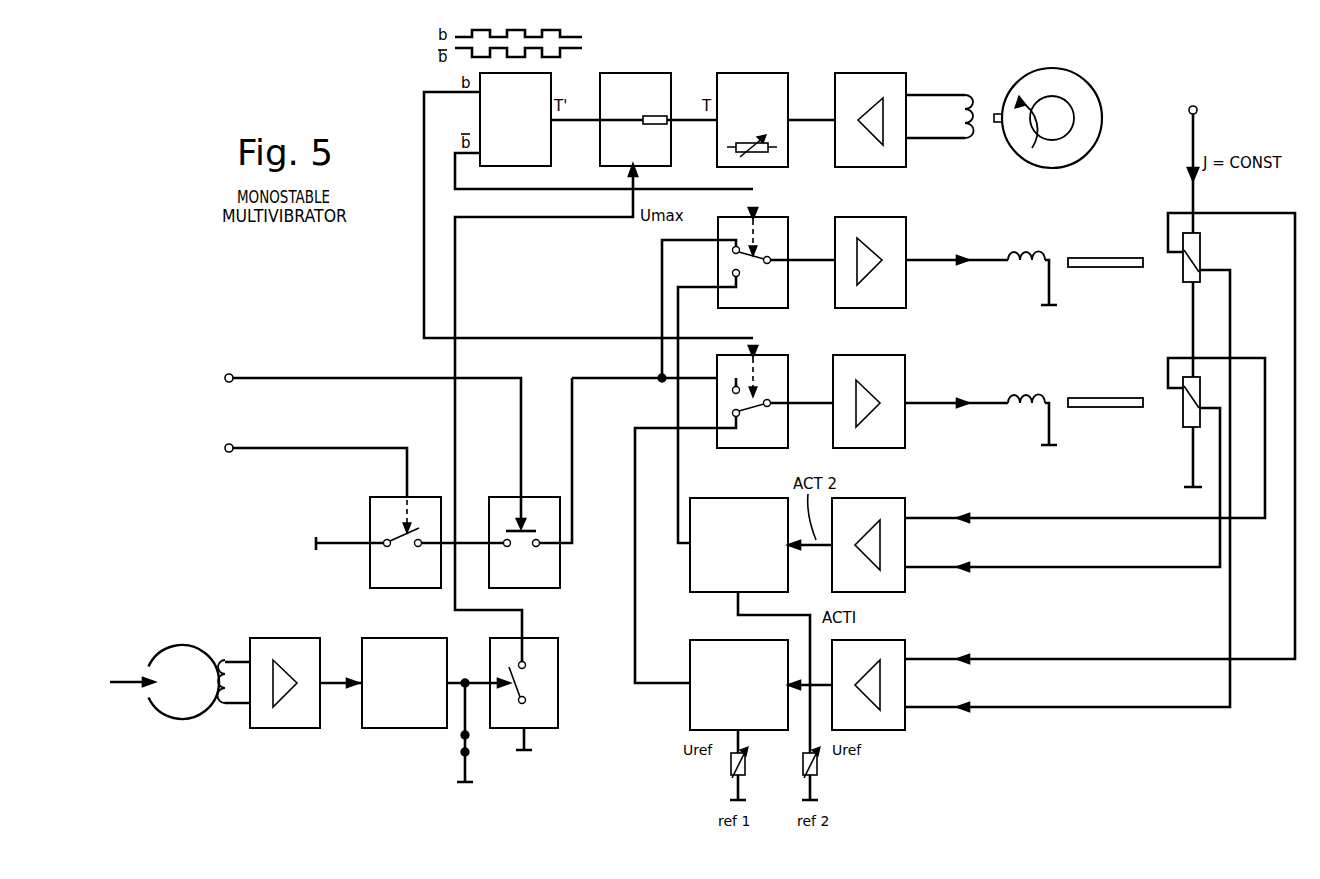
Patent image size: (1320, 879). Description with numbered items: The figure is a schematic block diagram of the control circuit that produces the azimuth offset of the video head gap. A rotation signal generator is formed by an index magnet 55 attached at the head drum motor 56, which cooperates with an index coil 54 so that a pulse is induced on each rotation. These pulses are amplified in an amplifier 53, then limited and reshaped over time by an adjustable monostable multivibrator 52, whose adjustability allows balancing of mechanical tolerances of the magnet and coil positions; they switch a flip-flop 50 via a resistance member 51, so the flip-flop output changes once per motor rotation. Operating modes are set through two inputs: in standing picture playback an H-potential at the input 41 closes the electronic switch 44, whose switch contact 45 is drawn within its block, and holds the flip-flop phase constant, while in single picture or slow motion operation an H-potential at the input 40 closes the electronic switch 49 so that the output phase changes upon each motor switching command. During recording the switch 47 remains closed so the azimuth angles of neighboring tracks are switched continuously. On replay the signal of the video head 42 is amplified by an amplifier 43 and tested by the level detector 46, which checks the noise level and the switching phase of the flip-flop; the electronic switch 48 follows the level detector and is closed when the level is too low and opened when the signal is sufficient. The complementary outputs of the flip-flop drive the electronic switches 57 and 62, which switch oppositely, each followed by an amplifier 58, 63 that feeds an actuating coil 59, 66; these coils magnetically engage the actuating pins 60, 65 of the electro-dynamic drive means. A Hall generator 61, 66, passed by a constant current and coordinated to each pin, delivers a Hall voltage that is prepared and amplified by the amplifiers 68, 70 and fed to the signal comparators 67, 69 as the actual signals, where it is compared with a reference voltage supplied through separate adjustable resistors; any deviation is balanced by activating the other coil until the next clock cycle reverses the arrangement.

The input 40 is at (229, 374).
The input 41 is at (229, 452).
The video head 42 is at (177, 640).
The amplifier 43 is at (301, 722).
The electronic switch 44 is at (370, 510).
The switch 45 is at (370, 578).
The level detector 46 is at (412, 722).
The switch 47 is at (467, 740).
The electronic switch 48 is at (558, 712).
The electronic switch 49 is at (560, 574).
The flip-flop 50 is at (551, 157).
The resistance member 51 is at (669, 157).
The adjustable monostable multivibrator 52 is at (787, 160).
The amplifier 53 is at (905, 160).
The index coil 54 is at (974, 146).
The index magnet 55 is at (998, 112).
The head drum motor 56 is at (1095, 105).
The electronic switch 57 is at (787, 300).
The amplifier 58 is at (905, 300).
The coil 59 is at (1024, 250).
The actuating pin 60 is at (1104, 256).
The Hall generator 61 is at (1180, 268).
The electronic switch 62 is at (787, 440).
The amplifier 63 is at (904, 440).
The actuating pin 65 is at (1103, 396).
The Hall generator 66 is at (1026, 392).
The signal comparator 67 is at (690, 567).
The amplifier 68 is at (903, 582).
The signal comparator 69 is at (690, 707).
The amplifier 70 is at (903, 722).